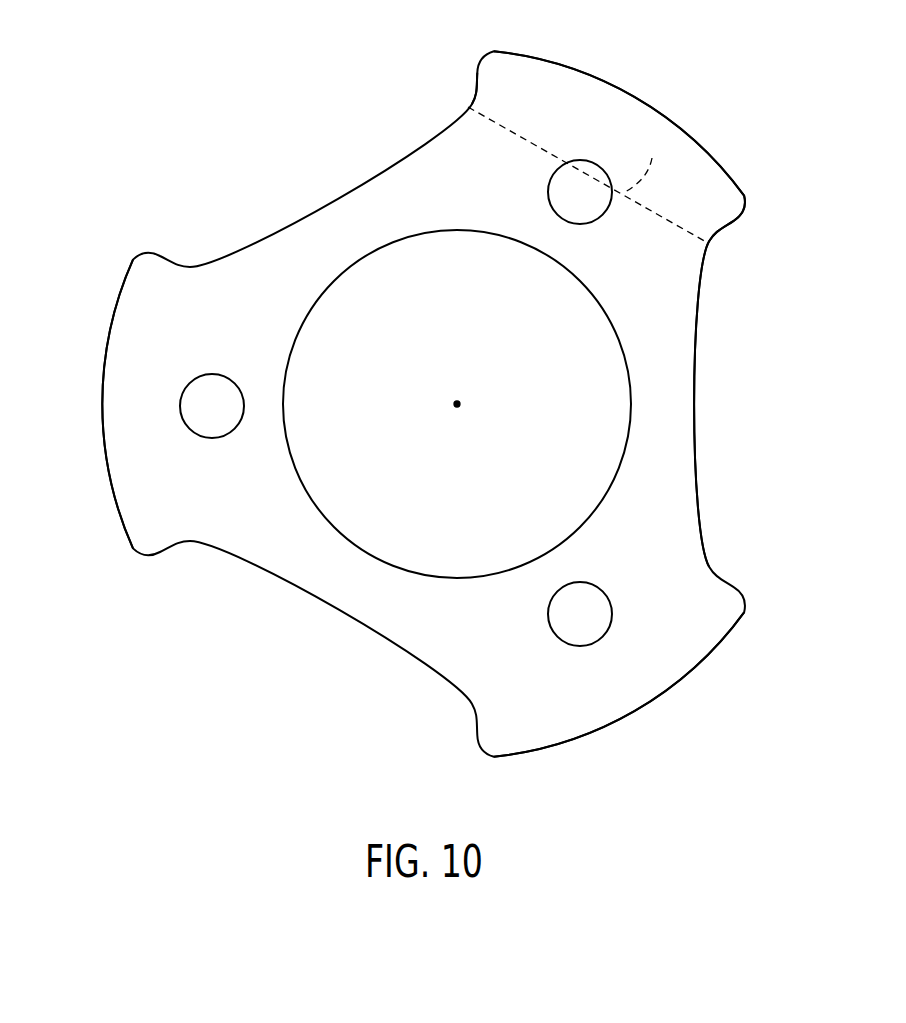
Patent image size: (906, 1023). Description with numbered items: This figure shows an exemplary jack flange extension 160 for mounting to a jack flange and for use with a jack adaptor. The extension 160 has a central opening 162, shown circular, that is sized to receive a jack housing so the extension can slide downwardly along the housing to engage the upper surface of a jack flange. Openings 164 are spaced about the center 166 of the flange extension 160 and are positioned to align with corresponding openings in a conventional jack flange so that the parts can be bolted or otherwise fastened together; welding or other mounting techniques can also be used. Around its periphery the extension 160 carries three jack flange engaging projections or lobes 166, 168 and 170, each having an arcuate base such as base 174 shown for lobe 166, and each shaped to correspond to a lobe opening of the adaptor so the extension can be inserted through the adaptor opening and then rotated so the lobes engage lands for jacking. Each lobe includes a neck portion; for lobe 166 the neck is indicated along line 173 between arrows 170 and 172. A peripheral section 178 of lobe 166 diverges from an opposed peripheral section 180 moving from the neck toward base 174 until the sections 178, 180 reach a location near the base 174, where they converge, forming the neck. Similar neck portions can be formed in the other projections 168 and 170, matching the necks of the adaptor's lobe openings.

The jack flange extension 160 is at (312, 191).
The central opening 162 is at (634, 403).
The openings 164 is at (193, 405).
The lobe 166 is at (457, 404).
The lobe 168 is at (133, 299).
The lobe 170 is at (714, 256).
The arrow 172 is at (464, 102).
The line 173 is at (643, 165).
The arcuate base 174 is at (712, 154).
The peripheral section 178 is at (734, 221).
The peripheral section 180 is at (478, 85).